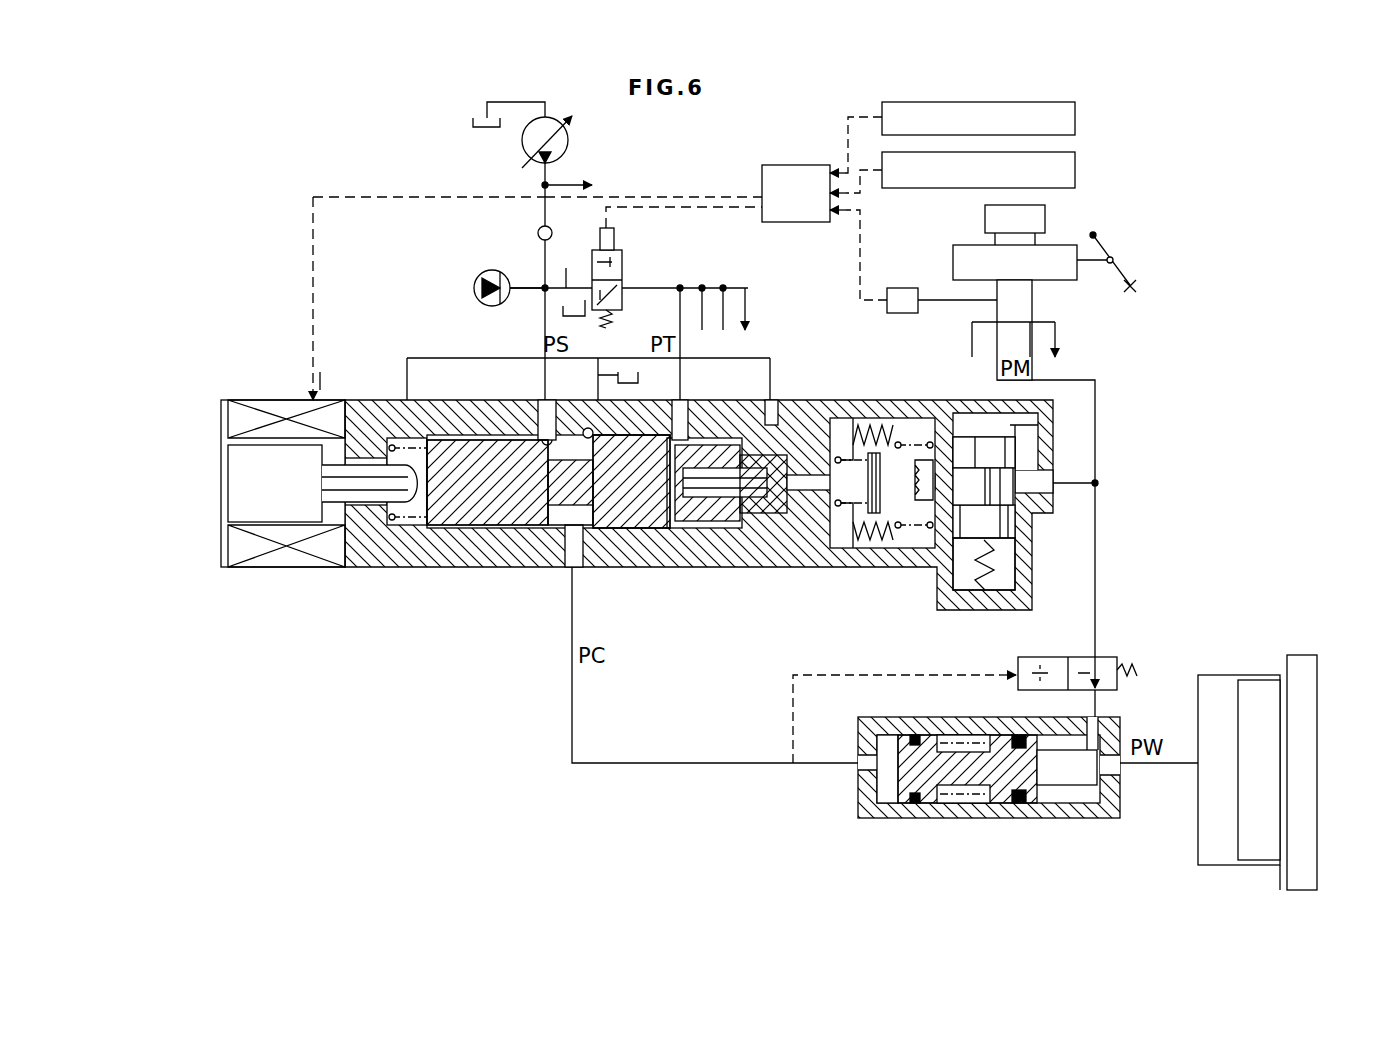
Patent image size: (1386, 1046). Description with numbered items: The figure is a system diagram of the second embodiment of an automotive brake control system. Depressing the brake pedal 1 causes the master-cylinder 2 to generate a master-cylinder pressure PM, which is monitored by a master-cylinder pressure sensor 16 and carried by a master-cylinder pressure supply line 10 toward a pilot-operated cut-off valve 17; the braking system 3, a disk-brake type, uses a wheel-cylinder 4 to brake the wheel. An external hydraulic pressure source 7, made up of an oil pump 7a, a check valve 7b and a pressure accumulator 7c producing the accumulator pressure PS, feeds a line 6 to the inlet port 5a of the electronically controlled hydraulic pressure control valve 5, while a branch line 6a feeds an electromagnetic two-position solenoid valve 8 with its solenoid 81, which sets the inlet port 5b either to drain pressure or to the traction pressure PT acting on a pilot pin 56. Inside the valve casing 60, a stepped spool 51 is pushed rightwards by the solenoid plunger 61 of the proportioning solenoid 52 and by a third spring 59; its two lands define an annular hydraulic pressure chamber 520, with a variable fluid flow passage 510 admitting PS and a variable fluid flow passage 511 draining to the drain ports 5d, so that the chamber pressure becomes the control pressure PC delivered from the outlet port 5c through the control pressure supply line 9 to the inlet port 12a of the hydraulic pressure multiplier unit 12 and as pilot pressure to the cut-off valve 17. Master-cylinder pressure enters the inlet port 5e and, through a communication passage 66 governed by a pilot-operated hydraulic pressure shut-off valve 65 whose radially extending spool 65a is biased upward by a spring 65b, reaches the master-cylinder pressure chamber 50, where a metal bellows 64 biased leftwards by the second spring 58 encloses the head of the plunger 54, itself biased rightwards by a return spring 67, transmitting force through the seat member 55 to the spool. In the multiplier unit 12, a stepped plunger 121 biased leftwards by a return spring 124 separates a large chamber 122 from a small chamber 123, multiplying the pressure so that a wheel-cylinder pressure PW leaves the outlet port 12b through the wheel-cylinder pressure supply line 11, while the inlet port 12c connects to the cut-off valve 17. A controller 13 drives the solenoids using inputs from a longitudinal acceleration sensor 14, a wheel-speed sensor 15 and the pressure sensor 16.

The brake pedal 1 is at (1140, 278).
The master-cylinder 2 is at (1060, 245).
The braking system 3 is at (1300, 655).
The wheel-cylinder 4 is at (1198, 862).
The hydraulic pressure control valve 5 is at (822, 392).
The inlet port 5a is at (530, 402).
The inlet port 5b is at (686, 400).
The outlet port 5c is at (585, 565).
The drain ports 5d is at (421, 400).
The inlet port 5e is at (1045, 478).
The line 6 is at (540, 318).
The branch line 6a is at (568, 265).
The external hydraulic pressure source 7 is at (520, 262).
The oil pump 7a is at (568, 150).
The check valve 7b is at (552, 228).
The pressure accumulator 7c is at (478, 275).
The electromagnetic two-position solenoid valve 8 is at (622, 268).
The electromagnetic solenoid 81 is at (614, 238).
The control pressure supply line 9 is at (572, 603).
The master-cylinder pressure supply line 10 is at (1095, 425).
The wheel-cylinder pressure supply line 11 is at (1175, 765).
The hydraulic pressure multiplier unit 12 is at (955, 717).
The inlet port 12a is at (862, 763).
The outlet port 12b is at (1115, 770).
The inlet port 12c is at (1095, 717).
The controller 13 is at (795, 165).
The longitudinal acceleration sensor 14 is at (1075, 118).
The wheel-speed sensor 15 is at (1075, 170).
The master-cylinder pressure sensor 16 is at (900, 288).
The pilot-operated cut-off valve 17 is at (1108, 657).
The master-cylinder pressure chamber 50 is at (900, 540).
The stepped spool 51 is at (488, 505).
The electromagnetic proportioning solenoid 52 is at (274, 400).
The plunger 54 is at (818, 493).
The seat member 55 is at (765, 515).
The pilot pin 56 is at (718, 495).
The second spring 58 is at (928, 548).
The third spring 59 is at (405, 505).
The valve casing 60 is at (953, 413).
The solenoid plunger 61 is at (300, 510).
The metal bellows 64 is at (858, 545).
The pilot-operated hydraulic pressure shut-off valve 65 is at (1040, 568).
The radially extending spool 65a is at (1010, 520).
The spring 65b is at (985, 590).
The communication passage 66 is at (960, 415).
The return spring 67 is at (855, 418).
The stepped plunger 121 is at (960, 803).
The hydraulic fluid pressure chamber 122 is at (887, 803).
The hydraulic fluid pressure chamber 123 is at (1088, 785).
The return spring 124 is at (975, 803).
The variable fluid flow passage 510 is at (487, 482).
The variable fluid flow passage 511 is at (631, 481).
The annular hydraulic pressure chamber 520 is at (560, 532).